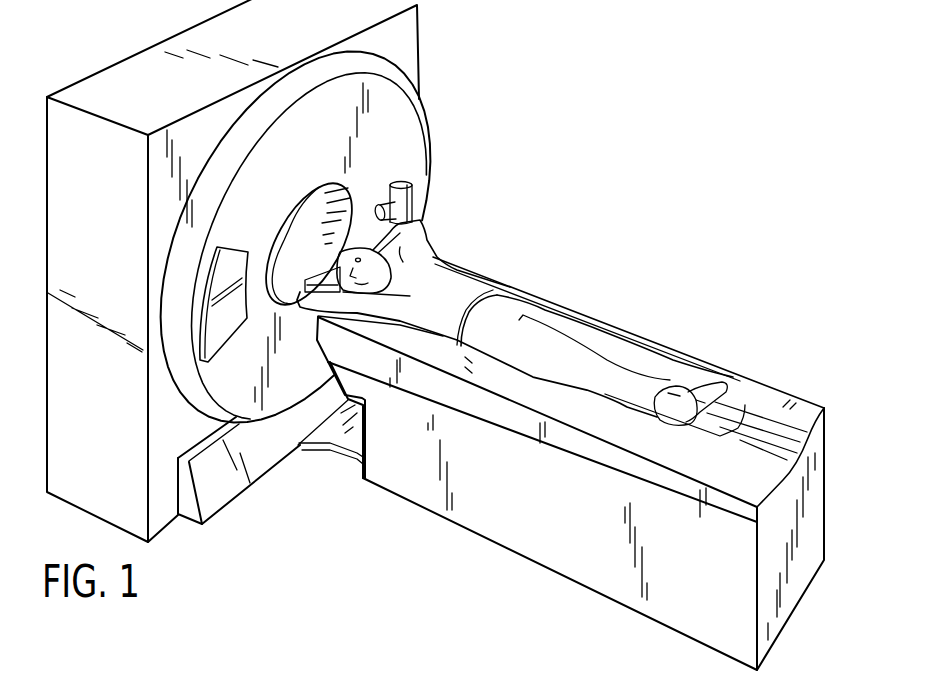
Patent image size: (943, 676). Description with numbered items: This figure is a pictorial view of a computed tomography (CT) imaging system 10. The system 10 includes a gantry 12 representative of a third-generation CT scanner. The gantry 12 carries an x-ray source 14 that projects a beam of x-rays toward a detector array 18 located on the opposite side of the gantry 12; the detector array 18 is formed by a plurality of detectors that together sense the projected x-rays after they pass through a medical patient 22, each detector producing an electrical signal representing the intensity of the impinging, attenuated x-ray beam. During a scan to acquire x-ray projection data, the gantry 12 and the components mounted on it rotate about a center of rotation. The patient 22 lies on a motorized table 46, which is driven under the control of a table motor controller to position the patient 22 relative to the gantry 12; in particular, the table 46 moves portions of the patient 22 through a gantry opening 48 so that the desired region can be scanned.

The computed tomography (CT) imaging system 10 is at (545, 130).
The gantry 12 is at (410, 151).
The x-ray source 14 is at (403, 203).
The detector array 18 is at (224, 332).
The medical patient 22 is at (460, 287).
The motorized table 46 is at (553, 552).
The gantry opening 48 is at (295, 236).